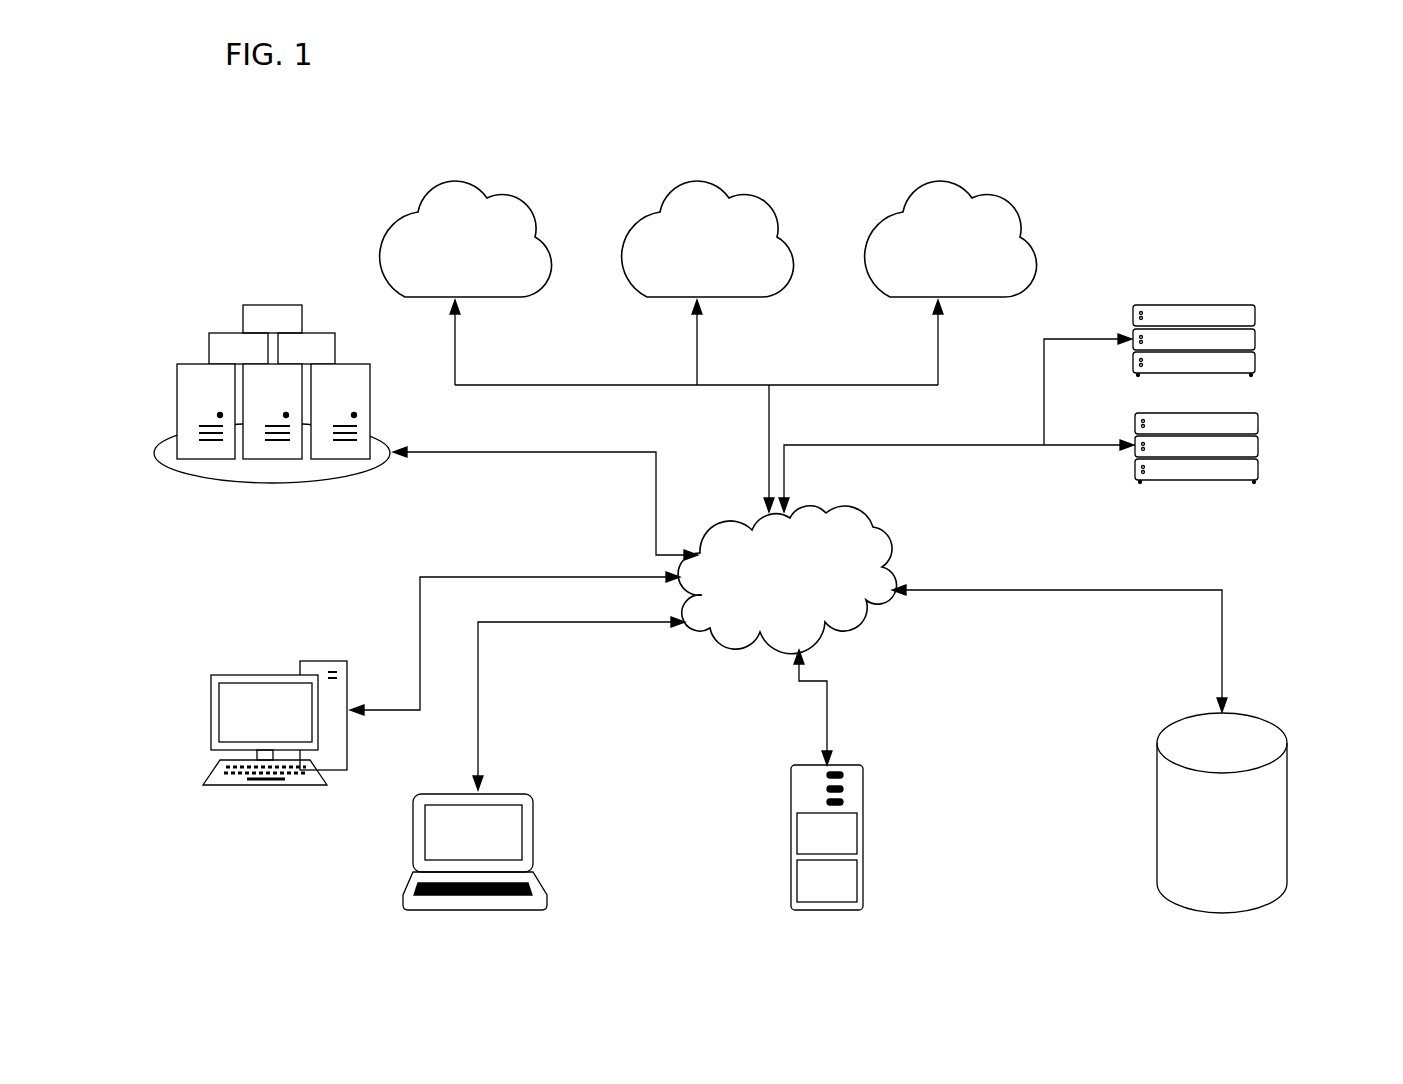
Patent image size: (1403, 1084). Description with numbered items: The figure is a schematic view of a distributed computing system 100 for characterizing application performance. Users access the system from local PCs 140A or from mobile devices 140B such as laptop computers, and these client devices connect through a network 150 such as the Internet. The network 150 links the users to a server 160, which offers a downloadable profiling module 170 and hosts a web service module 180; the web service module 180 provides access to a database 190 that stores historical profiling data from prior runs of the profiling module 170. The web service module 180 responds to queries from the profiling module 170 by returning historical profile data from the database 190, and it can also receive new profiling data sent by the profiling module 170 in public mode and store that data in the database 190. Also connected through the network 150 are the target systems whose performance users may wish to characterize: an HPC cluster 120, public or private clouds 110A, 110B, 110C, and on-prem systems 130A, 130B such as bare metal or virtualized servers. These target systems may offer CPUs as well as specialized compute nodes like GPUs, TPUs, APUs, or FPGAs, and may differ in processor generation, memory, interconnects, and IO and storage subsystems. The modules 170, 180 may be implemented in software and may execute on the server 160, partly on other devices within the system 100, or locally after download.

The distributed computing system 100 is at (1180, 84).
The public or private cloud 110A is at (487, 199).
The public or private cloud 110B is at (729, 199).
The public or private cloud 110C is at (972, 199).
The HPC cluster 120 is at (302, 483).
The on-prem system 130A is at (1255, 308).
The on-prem system 130B is at (1258, 415).
The local PC 140A is at (232, 787).
The mobile device 140B is at (403, 912).
The network 150 is at (888, 545).
The server 160 is at (795, 857).
The profiling module 170 is at (848, 850).
The web service module 180 is at (827, 881).
The database 190 is at (1162, 888).